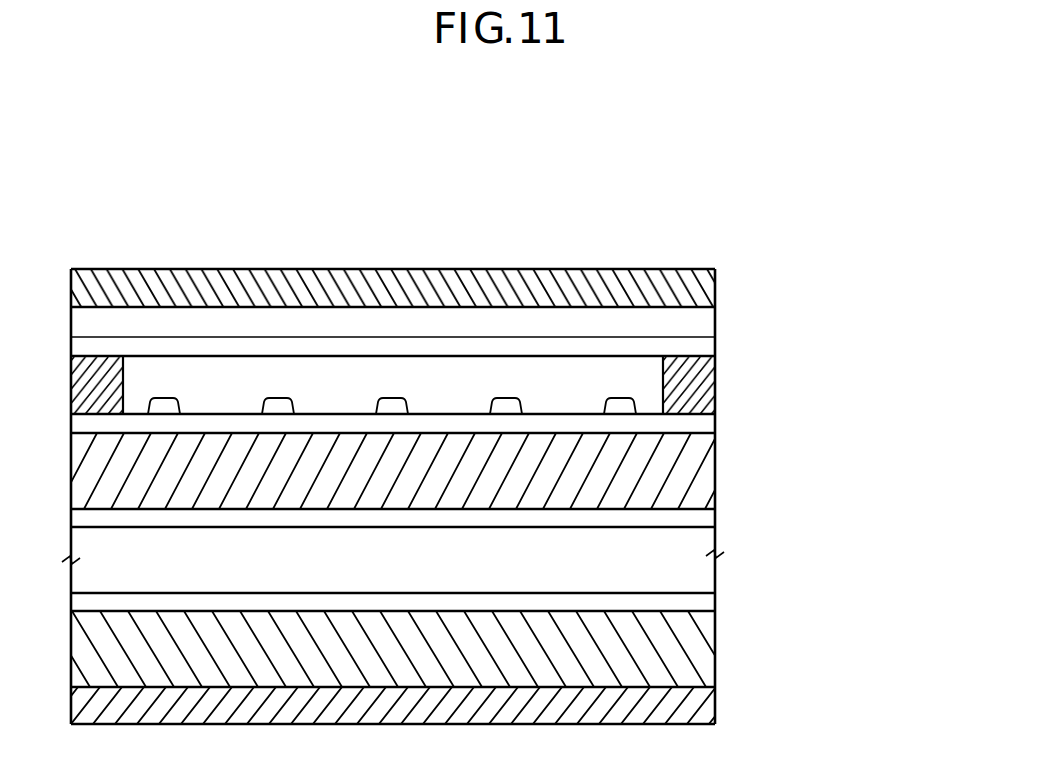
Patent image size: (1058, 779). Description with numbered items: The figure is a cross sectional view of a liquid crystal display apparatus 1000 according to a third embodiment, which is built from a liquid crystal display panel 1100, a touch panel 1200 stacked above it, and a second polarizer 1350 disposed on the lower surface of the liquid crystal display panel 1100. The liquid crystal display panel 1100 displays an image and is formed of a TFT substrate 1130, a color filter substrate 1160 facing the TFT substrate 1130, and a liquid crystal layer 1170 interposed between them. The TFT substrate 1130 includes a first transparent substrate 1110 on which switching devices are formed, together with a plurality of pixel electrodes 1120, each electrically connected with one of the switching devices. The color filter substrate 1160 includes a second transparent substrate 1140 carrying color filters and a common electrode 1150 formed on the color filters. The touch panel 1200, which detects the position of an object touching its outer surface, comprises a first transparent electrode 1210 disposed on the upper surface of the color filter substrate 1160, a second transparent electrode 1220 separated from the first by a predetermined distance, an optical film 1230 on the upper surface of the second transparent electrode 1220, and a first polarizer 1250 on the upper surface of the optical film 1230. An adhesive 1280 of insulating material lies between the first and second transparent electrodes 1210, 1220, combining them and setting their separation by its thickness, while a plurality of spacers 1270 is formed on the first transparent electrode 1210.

The liquid crystal display apparatus 1000 is at (441, 163).
The liquid crystal display panel 1100 is at (869, 503).
The first transparent substrate 1110 is at (715, 657).
The pixel electrodes 1120 is at (715, 600).
The TFT substrate 1130 is at (796, 610).
The second transparent substrate 1140 is at (715, 470).
The common electrode 1150 is at (715, 518).
The color filter substrate 1160 is at (796, 487).
The liquid crystal layer 1170 is at (717, 580).
The touch panel 1200 is at (796, 448).
The first transparent electrode 1210 is at (715, 424).
The second transparent electrode 1220 is at (715, 350).
The optical film 1230 is at (715, 323).
The first polarizer 1250 is at (716, 272).
The spacers 1270 is at (622, 402).
The adhesive 1280 is at (715, 387).
The second polarizer 1350 is at (715, 707).